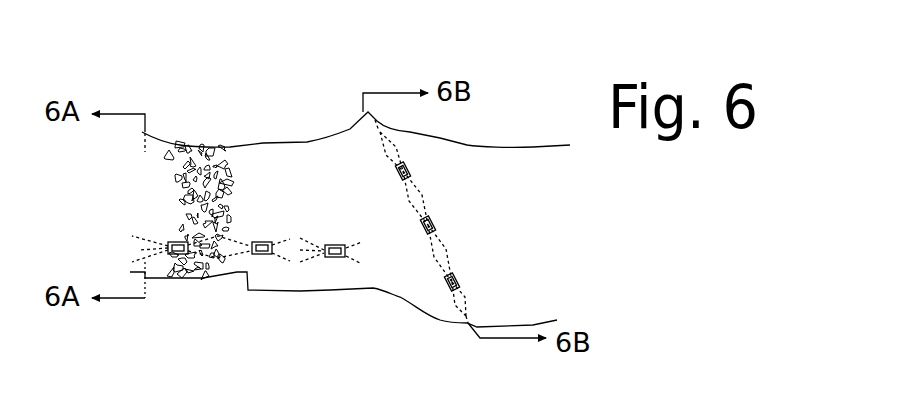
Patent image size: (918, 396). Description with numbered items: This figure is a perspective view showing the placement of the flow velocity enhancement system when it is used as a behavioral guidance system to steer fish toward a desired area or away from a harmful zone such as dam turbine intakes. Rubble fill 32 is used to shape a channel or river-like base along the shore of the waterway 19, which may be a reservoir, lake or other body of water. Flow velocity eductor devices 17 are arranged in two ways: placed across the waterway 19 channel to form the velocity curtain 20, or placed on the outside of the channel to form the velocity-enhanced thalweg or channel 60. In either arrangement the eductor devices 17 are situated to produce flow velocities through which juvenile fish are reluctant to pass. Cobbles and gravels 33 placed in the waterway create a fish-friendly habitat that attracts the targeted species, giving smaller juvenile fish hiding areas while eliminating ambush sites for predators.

The flow velocity eductor device 17 is at (182, 258).
The waterway 19 is at (540, 278).
The velocity curtain 20 is at (463, 223).
The rubble fill 32 is at (173, 150).
The cobbles and gravels 33 is at (173, 178).
The velocity-enhanced thalweg or channel 60 is at (309, 168).